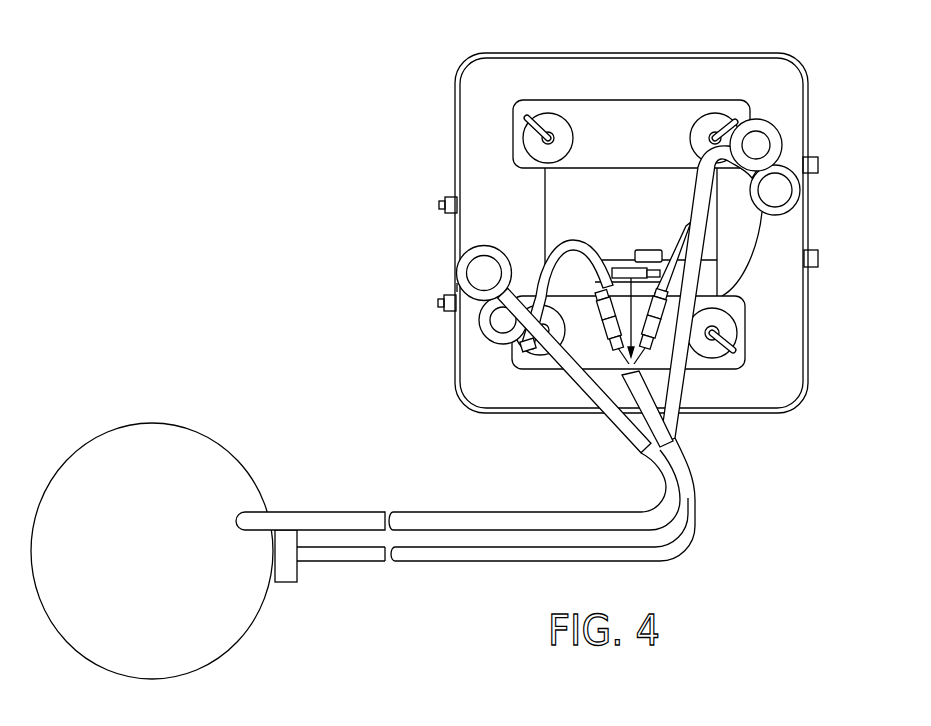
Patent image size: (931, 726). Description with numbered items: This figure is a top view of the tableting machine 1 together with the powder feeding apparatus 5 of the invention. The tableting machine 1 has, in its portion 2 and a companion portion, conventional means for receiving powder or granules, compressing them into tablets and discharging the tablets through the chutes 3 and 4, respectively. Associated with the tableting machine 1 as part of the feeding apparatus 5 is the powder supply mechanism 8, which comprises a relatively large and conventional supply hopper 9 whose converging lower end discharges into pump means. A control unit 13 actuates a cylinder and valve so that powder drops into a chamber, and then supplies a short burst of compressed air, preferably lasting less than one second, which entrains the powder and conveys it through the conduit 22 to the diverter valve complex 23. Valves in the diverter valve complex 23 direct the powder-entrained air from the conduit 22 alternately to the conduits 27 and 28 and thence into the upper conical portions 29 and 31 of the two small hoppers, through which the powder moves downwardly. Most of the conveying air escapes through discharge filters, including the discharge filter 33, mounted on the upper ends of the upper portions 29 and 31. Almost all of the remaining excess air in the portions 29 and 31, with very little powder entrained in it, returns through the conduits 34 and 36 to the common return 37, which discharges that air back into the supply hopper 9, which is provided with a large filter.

The tableting machine 1 is at (743, 427).
The portion 2 is at (457, 247).
The chute 3 is at (443, 315).
The chute 4 is at (809, 158).
The powder feeding apparatus 5 is at (338, 503).
The powder supply mechanism 8 is at (131, 410).
The supply hopper 9 is at (62, 468).
The control unit 13 is at (283, 572).
The conduit 22 is at (333, 553).
The diverter valve complex 23 is at (626, 243).
The conduit 27 is at (758, 130).
The conduit 28 is at (497, 335).
The upper conical portion 29 is at (790, 210).
The upper conical portion 31 is at (455, 288).
The discharge filter 33 is at (473, 275).
The conduit 34 is at (717, 158).
The conduit 36 is at (560, 356).
The common return 37 is at (368, 517).